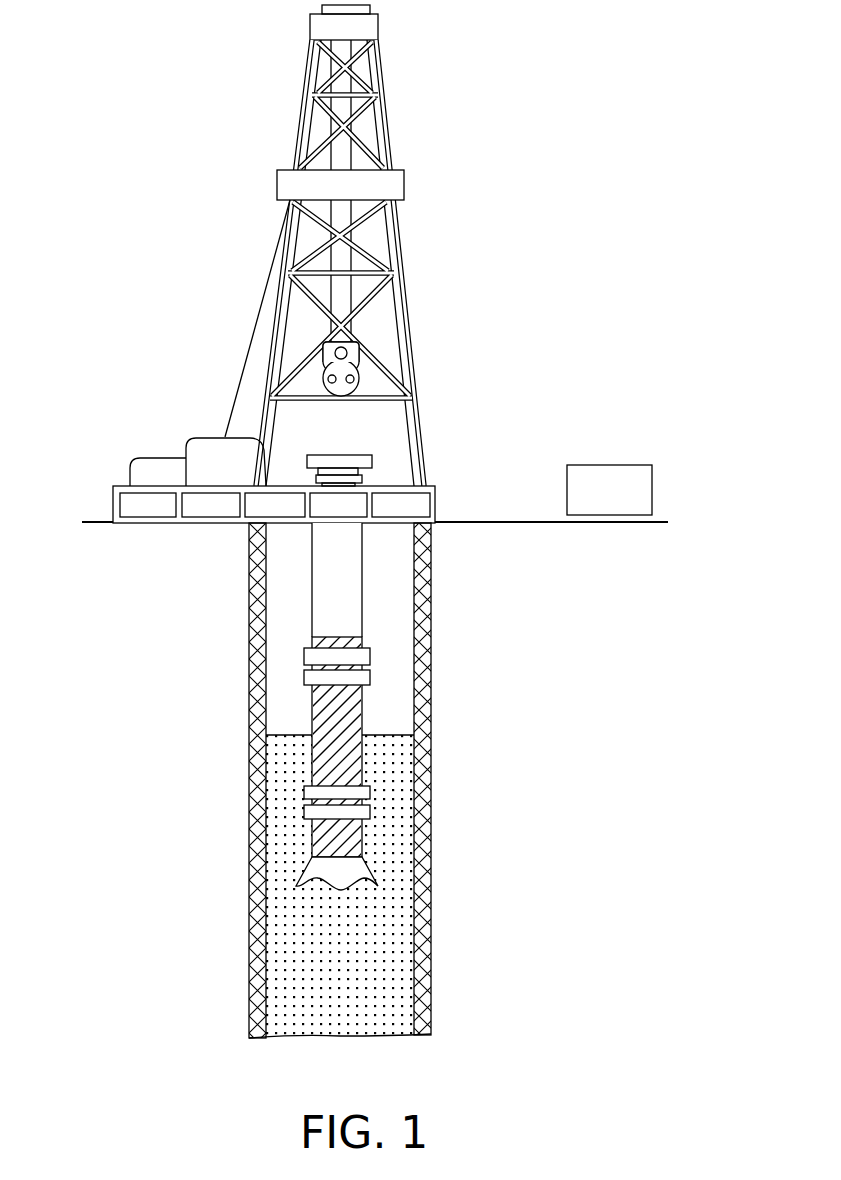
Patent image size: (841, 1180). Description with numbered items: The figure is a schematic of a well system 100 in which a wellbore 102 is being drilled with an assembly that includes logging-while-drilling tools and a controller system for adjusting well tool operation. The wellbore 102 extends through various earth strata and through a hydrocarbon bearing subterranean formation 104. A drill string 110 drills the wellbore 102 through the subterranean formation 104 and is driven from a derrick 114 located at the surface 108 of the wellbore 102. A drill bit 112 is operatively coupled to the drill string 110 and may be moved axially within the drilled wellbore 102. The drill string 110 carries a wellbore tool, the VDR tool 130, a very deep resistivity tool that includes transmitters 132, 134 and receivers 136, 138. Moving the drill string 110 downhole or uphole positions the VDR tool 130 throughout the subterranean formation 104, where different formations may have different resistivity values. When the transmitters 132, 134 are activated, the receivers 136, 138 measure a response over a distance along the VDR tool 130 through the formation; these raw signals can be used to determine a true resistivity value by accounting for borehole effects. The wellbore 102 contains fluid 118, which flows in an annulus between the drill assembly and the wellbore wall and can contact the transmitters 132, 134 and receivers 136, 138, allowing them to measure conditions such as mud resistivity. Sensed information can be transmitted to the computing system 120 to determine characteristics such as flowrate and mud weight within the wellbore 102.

The well system 100 is at (523, 237).
The wellbore 102 is at (414, 622).
The subterranean formation 104 is at (430, 895).
The surface 108 is at (100, 522).
The drill string 110 is at (326, 541).
The drill bit 112 is at (300, 885).
The derrick 114 is at (362, 460).
The fluid 118 is at (365, 945).
The computing system 120 is at (628, 506).
The VDR tool 130 is at (365, 750).
The transmitter 132 is at (305, 793).
The transmitter 134 is at (305, 815).
The receiver 136 is at (304, 652).
The receiver 138 is at (370, 677).